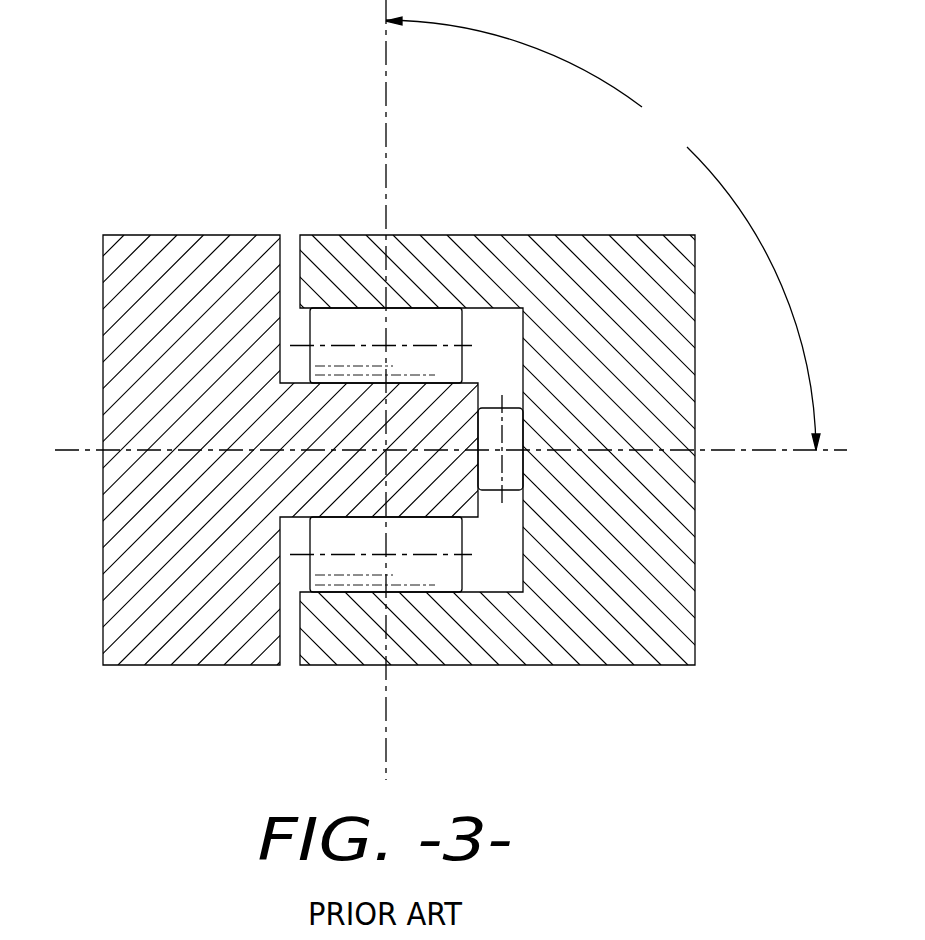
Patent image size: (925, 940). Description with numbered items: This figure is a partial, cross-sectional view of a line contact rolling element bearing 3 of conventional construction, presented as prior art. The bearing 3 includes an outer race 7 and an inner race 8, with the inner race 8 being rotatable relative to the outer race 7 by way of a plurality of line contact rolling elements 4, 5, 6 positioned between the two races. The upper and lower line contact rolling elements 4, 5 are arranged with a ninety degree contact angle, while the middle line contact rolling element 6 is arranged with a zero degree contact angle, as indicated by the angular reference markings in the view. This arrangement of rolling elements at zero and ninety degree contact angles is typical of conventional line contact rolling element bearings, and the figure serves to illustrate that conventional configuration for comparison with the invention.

The line contact rolling element bearing 3 is at (451, 390).
The upper line contact rolling element 4 is at (425, 330).
The lower line contact rolling element 5 is at (427, 568).
The middle line contact rolling element 6 is at (508, 465).
The outer race 7 is at (165, 575).
The inner race 8 is at (590, 290).